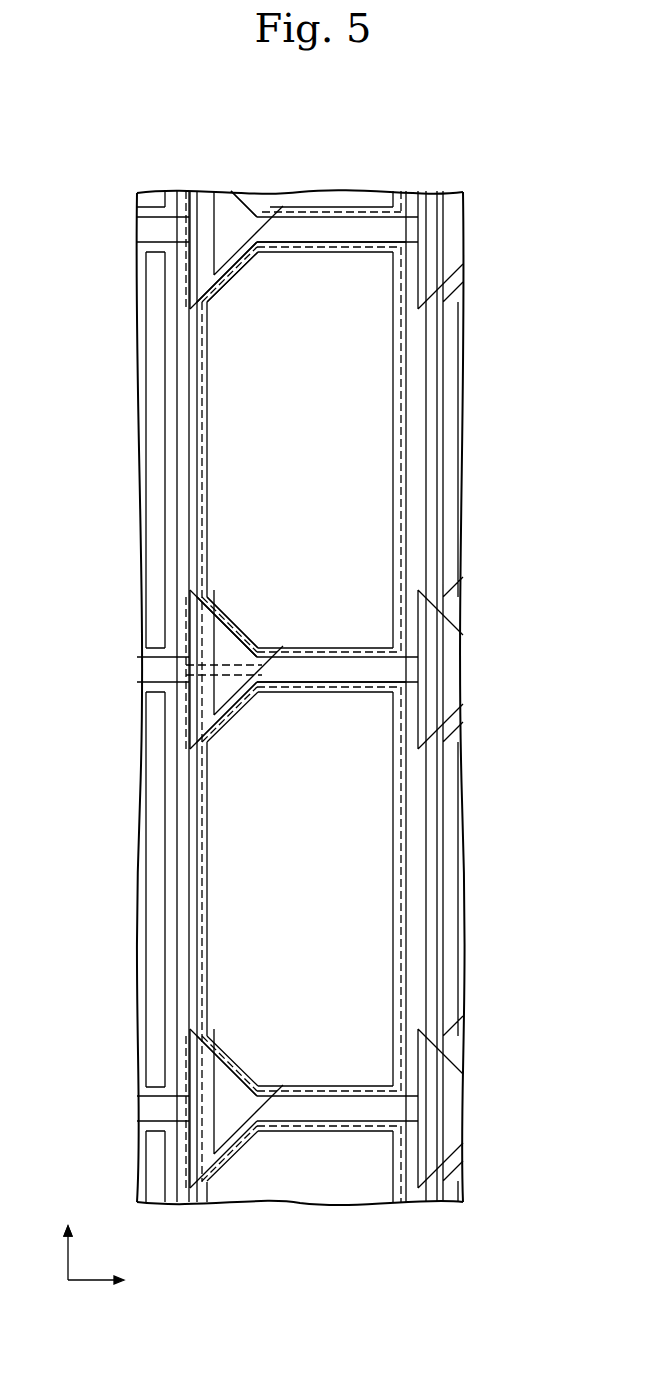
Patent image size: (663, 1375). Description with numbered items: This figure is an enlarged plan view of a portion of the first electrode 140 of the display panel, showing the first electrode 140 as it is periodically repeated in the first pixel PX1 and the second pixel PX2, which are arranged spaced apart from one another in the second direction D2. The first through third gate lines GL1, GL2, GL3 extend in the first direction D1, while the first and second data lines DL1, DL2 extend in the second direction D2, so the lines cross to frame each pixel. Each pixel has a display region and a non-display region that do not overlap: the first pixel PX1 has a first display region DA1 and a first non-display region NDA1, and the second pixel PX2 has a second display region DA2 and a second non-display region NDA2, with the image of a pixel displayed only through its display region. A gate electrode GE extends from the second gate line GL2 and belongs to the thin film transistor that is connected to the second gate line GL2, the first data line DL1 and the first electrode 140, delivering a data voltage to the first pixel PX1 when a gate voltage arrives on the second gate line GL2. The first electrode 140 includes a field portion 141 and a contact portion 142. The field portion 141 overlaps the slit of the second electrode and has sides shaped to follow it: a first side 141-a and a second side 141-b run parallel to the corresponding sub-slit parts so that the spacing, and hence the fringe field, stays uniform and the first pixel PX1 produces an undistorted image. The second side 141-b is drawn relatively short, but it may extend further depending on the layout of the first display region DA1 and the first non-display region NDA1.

The first data line DL1 is at (184, 198).
The second data line DL2 is at (413, 200).
The first gate line GL1 is at (152, 229).
The second gate line GL2 is at (152, 670).
The third gate line GL3 is at (152, 1108).
The first pixel PX1 is at (370, 696).
The second pixel PX2 is at (298, 889).
The field portion 141 is at (376, 416).
The first side 141-a is at (232, 293).
The second side 141-b is at (214, 585).
The first electrode 140 is at (205, 456).
The contact portion 142 is at (224, 640).
The first display region DA1 is at (196, 401).
The second display region DA2 is at (196, 861).
The first non-display region NDA1 is at (188, 598).
The second non-display region NDA2 is at (186, 725).
The gate electrode GE is at (192, 613).
The first direction D1 is at (115, 1282).
The second direction D2 is at (68, 1236).